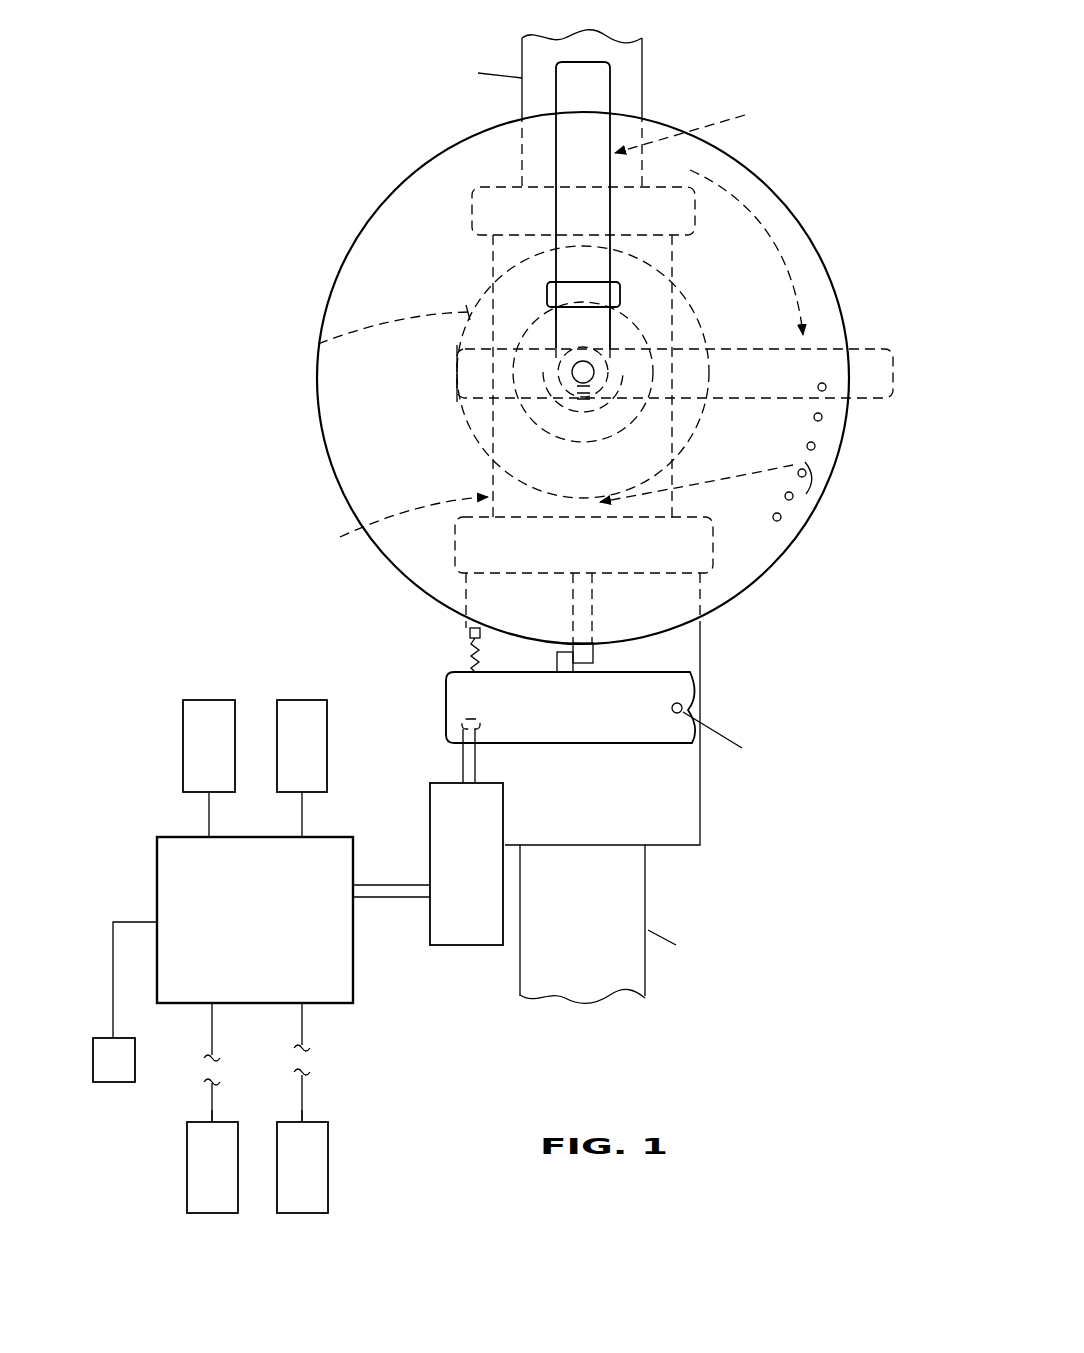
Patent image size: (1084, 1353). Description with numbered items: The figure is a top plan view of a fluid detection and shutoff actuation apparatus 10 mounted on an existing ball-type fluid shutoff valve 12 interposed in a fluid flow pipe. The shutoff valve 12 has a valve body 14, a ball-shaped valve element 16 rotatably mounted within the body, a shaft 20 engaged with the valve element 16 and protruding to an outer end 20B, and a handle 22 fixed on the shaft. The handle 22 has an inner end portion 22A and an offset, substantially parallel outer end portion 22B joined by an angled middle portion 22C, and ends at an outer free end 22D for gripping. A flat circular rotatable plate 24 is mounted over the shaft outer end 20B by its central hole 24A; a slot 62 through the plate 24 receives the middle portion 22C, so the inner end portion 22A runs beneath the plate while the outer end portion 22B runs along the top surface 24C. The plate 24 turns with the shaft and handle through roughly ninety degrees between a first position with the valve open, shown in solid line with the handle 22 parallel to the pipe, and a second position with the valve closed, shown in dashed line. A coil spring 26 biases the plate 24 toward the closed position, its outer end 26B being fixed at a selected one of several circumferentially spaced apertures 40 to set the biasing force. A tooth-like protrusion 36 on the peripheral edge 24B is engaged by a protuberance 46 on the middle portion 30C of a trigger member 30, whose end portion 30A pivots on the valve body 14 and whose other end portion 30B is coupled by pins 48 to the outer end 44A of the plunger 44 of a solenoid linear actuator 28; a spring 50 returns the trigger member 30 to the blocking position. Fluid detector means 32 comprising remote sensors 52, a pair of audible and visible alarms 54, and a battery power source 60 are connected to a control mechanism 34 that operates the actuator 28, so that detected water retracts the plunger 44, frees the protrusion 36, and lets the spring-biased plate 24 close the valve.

The fluid detection and shutoff actuation apparatus 10 is at (275, 170).
The fluid shutoff valve 12 is at (462, 632).
The valve body 14 is at (705, 586).
The valve element 16 is at (458, 393).
The shaft 20 is at (575, 365).
The outer end of the shaft 20B is at (590, 388).
The handle 22 is at (613, 75).
The inner end portion of the handle 22A is at (455, 352).
The outer end portion of the handle 22B is at (600, 197).
The middle portion of the handle 22C is at (600, 290).
The outer free end of the handle 22D is at (592, 66).
The rotatable plate 24 is at (385, 188).
The central hole 24A is at (578, 388).
The peripheral edge 24B is at (328, 460).
The top surface 24C is at (817, 280).
The coil spring 26 is at (318, 344).
The outer end of the coil spring 26B is at (832, 498).
The linear actuator 28 is at (430, 938).
The trigger member 30 is at (634, 748).
The end portion of the trigger member 30A is at (688, 745).
The end portion of the trigger member 30B is at (447, 690).
The middle portion of the trigger member 30C is at (548, 745).
The fluid detector means 32 is at (355, 1107).
The control mechanism 34 is at (250, 1005).
The protrusion 36 is at (594, 655).
The apertures 40 is at (760, 512).
The plunger 44 is at (458, 765).
The outer end of the plunger 44A is at (458, 720).
The protuberance 46 is at (555, 655).
The pins 48 is at (683, 705).
The spring 50 is at (478, 660).
The sensors 52 is at (238, 1175).
The alarms 54 is at (302, 700).
The power source 60 is at (113, 1082).
The slot 62 is at (582, 285).